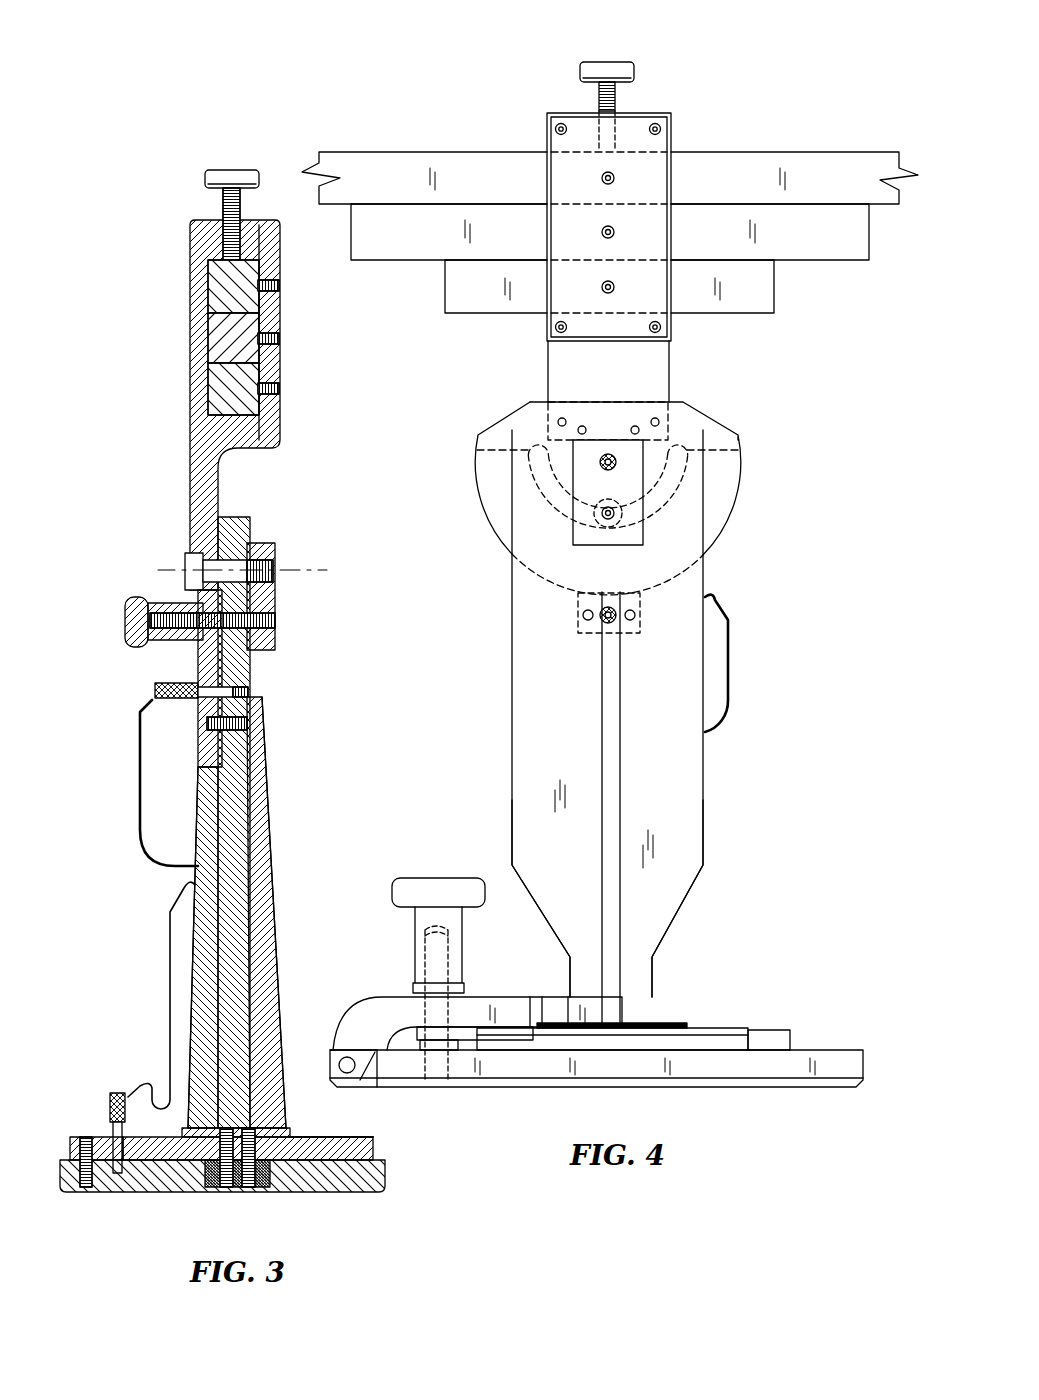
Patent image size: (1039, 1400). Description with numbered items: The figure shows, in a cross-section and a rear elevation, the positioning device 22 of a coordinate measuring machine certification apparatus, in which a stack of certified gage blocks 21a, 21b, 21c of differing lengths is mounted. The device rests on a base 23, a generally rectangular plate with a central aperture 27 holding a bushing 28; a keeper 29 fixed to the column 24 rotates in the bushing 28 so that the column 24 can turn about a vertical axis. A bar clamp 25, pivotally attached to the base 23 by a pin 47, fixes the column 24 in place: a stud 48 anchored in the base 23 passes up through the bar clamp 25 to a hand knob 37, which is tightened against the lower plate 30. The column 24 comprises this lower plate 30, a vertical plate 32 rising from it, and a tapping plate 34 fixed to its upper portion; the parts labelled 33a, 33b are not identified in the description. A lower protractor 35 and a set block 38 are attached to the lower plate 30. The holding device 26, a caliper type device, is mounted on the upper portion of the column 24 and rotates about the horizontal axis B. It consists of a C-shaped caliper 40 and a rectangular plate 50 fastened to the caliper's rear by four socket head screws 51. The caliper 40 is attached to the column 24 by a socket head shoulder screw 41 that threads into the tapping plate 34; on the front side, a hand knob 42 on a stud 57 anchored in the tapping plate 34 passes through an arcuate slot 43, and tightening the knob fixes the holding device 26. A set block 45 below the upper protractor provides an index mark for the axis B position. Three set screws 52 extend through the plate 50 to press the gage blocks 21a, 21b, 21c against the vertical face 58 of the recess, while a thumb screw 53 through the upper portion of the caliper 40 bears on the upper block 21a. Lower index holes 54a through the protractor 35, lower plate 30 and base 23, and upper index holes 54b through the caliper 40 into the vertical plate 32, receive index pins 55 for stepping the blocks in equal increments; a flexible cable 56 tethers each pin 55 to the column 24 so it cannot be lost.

In FIG. 4, the gage block 21a is at (610, 153).
In FIG. 4, the gage block 21b is at (610, 257).
In FIG. 4, the gage block 21c is at (589, 311).
In FIG. 3, the positioning device 22 is at (295, 912).
In FIG. 4, the positioning device 22 is at (574, 713).
In FIG. 3, the base 23 is at (237, 1195).
In FIG. 4, the base 23 is at (600, 1095).
In FIG. 3, the column 24 is at (301, 912).
In FIG. 4, the column 24 is at (593, 528).
In FIG. 4, the bar clamp 25 is at (477, 998).
In FIG. 3, the holding device 26 is at (190, 405).
In FIG. 4, the holding device 26 is at (570, 371).
In FIG. 3, the aperture 27 is at (187, 1179).
In FIG. 3, the bushing 28 is at (255, 1179).
In FIG. 3, the keeper 29 is at (232, 1179).
In FIG. 3, the lower plate 30 is at (366, 1131).
In FIG. 4, the lower plate 30 is at (630, 1075).
In FIG. 3, the vertical plate 32 is at (159, 947).
In FIG. 4, the vertical plate 32 is at (571, 881).
In FIG. 3, the column rod 33a is at (149, 947).
In FIG. 3, the column rod 33b is at (287, 945).
In FIG. 4, the column rod 33b is at (652, 809).
In FIG. 3, the tapping plate 34 is at (285, 640).
In FIG. 3, the protractor 35 is at (248, 1132).
In FIG. 4, the protractor 35 is at (623, 1012).
In FIG. 4, the hand knob 37 is at (421, 913).
In FIG. 3, the set block 38 is at (72, 1132).
In FIG. 4, the set block 38 is at (801, 1012).
In FIG. 3, the caliper 40 is at (179, 423).
In FIG. 4, the caliper 40 is at (573, 227).
In FIG. 3, the socket head shoulder screw 41 is at (224, 549).
In FIG. 3, the hand knob 42 is at (168, 598).
In FIG. 4, the arcuate slot 43 is at (656, 516).
In FIG. 3, the set block 45 is at (185, 688).
In FIG. 4, the set block 45 is at (589, 635).
In FIG. 4, the pin 47 is at (334, 1049).
In FIG. 4, the stud 48 is at (404, 1000).
In FIG. 3, the plate 50 is at (306, 353).
In FIG. 4, the plate 50 is at (608, 491).
In FIG. 4, the socket head screws 51 is at (615, 229).
In FIG. 3, the socket head set screws 52 is at (304, 338).
In FIG. 4, the socket head set screws 52 is at (633, 224).
In FIG. 3, the thumb screw 53 is at (213, 191).
In FIG. 4, the thumb screw 53 is at (638, 82).
In FIG. 3, the index holes 54a is at (69, 1182).
In FIG. 3, the index holes 54b is at (197, 735).
In FIG. 3, the index pins 55 is at (150, 916).
In FIG. 3, the flexible cable 56 is at (146, 904).
In FIG. 4, the flexible cable 56 is at (746, 669).
In FIG. 3, the stud 57 is at (294, 596).
In FIG. 3, the vertical face 58 is at (179, 337).
In FIG. 3, the horizontal axis B is at (341, 545).